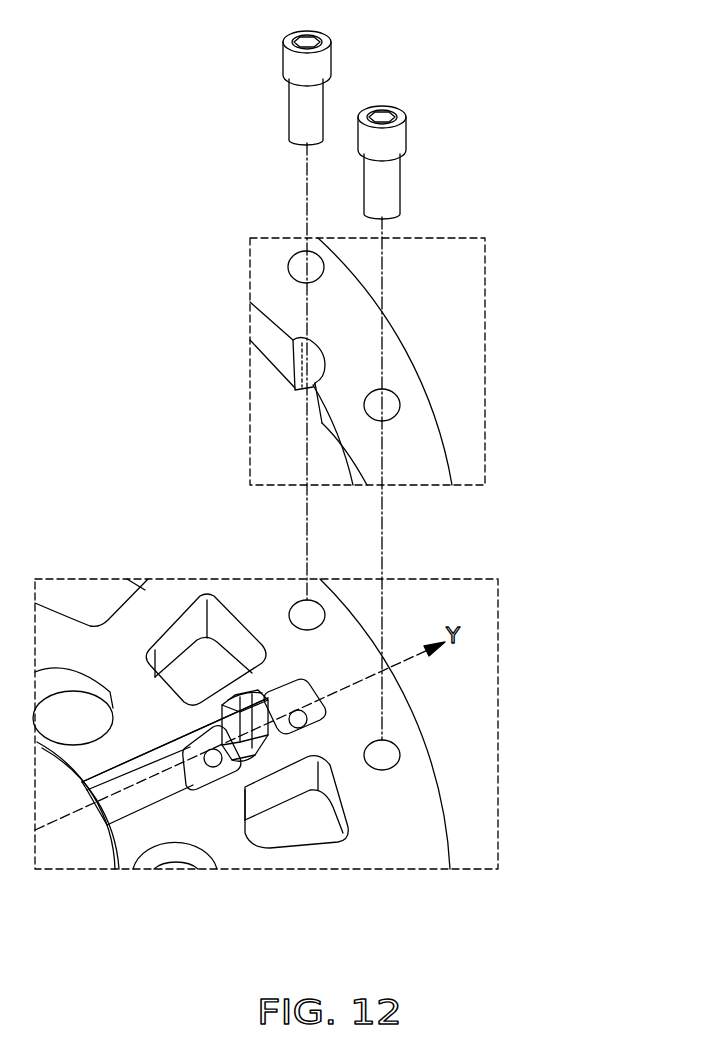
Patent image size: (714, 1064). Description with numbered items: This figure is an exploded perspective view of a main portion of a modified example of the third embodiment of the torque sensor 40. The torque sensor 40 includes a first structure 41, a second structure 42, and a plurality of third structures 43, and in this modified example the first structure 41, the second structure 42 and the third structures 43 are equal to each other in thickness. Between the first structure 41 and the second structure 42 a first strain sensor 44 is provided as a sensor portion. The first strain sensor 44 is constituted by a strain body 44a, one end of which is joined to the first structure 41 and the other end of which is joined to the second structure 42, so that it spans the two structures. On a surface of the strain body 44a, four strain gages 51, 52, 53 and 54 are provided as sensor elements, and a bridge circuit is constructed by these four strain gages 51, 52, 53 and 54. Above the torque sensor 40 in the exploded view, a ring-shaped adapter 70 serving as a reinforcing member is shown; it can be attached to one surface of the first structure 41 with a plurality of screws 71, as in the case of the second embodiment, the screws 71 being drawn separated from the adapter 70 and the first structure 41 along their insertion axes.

The torque sensor 40 is at (265, 772).
The first structure 41 is at (407, 845).
The second structure 42 is at (237, 843).
The third structures 43 is at (247, 761).
The first strain sensor 44 is at (204, 758).
The strain body 44a is at (217, 722).
The strain gage 51 is at (217, 697).
The strain gage 52 is at (202, 628).
The strain gage 53 is at (219, 631).
The strain gage 54 is at (233, 637).
The ring-shaped adapter 70 is at (432, 447).
The screws 71 is at (333, 40).